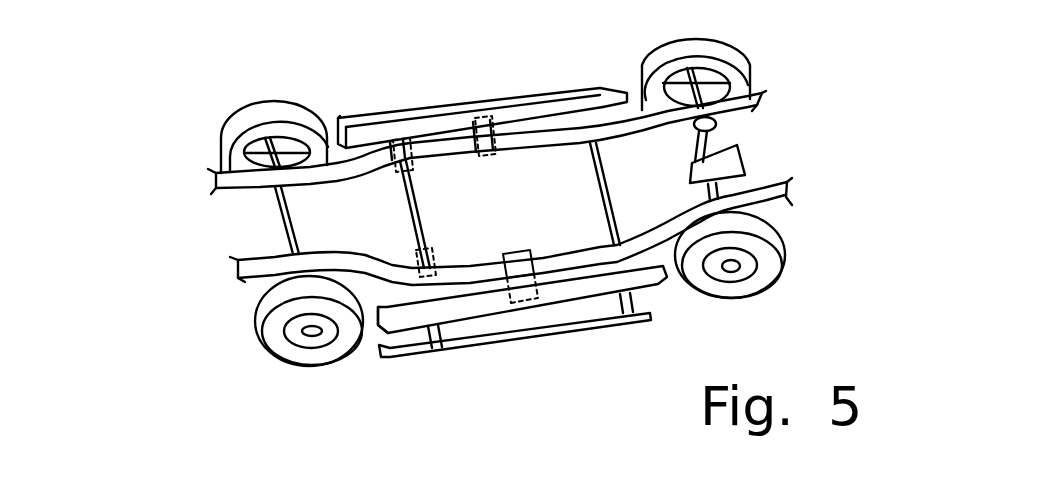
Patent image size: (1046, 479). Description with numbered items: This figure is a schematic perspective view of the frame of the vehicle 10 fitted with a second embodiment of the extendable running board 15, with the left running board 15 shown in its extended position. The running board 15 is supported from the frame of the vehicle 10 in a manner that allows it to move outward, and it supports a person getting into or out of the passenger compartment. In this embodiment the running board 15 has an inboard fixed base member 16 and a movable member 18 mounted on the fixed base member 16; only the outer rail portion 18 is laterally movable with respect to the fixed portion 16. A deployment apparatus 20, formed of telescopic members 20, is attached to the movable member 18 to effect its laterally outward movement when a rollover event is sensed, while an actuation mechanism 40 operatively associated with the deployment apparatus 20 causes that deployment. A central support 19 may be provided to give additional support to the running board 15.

The vehicle 10 is at (238, 228).
The running board 15 is at (515, 108).
The fixed base member 16 is at (378, 328).
The movable member 18 is at (467, 348).
The central support 19 is at (486, 152).
The deployment apparatus 20 is at (372, 142).
The actuation mechanism 40 is at (410, 238).